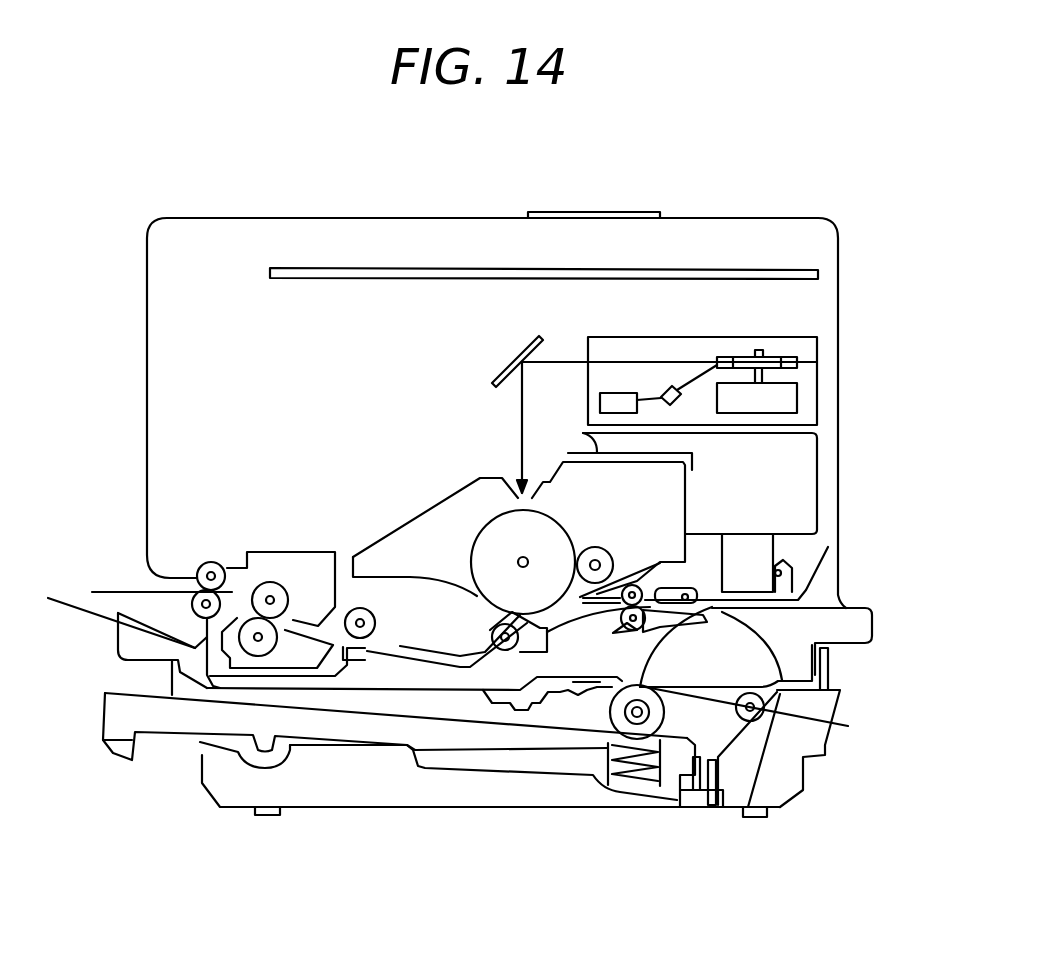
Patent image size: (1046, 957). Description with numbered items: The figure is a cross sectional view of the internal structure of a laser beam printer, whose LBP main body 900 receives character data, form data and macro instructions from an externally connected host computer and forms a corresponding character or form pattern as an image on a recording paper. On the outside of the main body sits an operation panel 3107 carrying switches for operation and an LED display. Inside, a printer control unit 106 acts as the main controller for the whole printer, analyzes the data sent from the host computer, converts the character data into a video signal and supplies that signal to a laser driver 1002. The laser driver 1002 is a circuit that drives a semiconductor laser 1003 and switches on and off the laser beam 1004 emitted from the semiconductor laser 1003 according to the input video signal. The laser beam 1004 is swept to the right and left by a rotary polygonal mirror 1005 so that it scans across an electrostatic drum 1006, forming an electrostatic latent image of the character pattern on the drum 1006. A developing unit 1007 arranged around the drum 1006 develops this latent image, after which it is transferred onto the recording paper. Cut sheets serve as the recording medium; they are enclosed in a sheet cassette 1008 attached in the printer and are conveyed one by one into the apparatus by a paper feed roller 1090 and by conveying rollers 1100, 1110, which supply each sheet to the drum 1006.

The LBP main body 900 is at (770, 218).
The operation panel 3107 is at (607, 212).
The printer control unit 106 is at (818, 272).
The laser beam 1004 is at (648, 362).
The rotary polygonal mirror 1005 is at (797, 362).
The laser driver 1002 is at (600, 401).
The semiconductor laser 1003 is at (680, 400).
The electrostatic drum 1006 is at (493, 518).
The developing unit 1007 is at (383, 546).
The sheet cassette 1008 is at (100, 740).
The paper feed roller 1090 is at (613, 712).
The conveying roller 1100 is at (848, 726).
The conveying roller 1110 is at (635, 632).